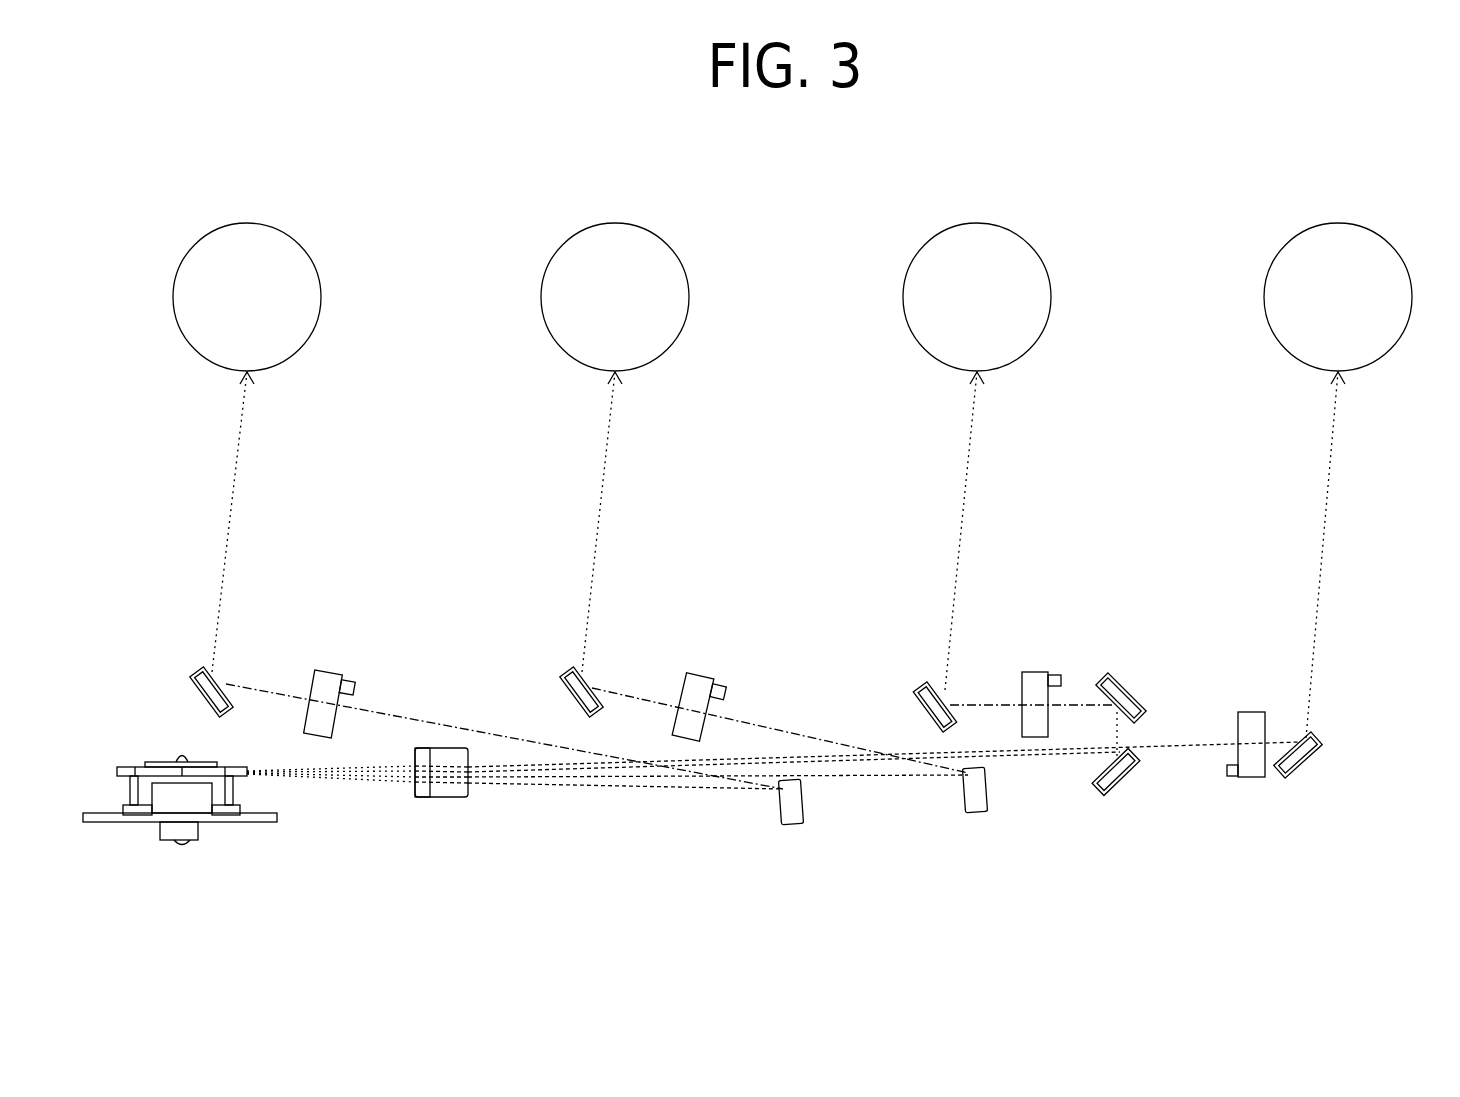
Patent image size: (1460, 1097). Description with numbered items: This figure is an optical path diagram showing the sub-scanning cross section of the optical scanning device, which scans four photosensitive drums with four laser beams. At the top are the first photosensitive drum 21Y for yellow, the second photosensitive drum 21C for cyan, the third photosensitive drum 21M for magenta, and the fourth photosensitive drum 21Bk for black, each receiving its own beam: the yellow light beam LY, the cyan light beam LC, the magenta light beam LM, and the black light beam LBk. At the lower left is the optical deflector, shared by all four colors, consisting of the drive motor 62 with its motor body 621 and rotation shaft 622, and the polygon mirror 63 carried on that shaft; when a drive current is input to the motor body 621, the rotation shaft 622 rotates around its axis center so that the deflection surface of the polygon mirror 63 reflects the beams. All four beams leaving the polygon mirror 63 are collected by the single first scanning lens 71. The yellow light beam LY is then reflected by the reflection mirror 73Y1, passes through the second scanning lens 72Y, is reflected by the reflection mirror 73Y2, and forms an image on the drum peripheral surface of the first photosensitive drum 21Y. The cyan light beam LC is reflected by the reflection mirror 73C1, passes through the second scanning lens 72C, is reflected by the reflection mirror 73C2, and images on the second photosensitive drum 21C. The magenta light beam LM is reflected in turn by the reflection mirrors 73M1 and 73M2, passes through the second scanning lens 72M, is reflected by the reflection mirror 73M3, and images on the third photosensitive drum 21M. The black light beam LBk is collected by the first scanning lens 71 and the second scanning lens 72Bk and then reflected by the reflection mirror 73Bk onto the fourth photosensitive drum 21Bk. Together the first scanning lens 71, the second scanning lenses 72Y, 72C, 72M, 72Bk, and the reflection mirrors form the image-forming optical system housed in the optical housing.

The first photosensitive drum 21Y is at (245, 238).
The second photosensitive drum 21C is at (613, 238).
The third photosensitive drum 21M is at (977, 238).
The fourth photosensitive drum 21Bk is at (1339, 238).
The yellow light beam LY is at (238, 480).
The cyan light beam LC is at (606, 480).
The magenta light beam LM is at (970, 480).
The black light beam LBk is at (1330, 480).
The drive motor 62 is at (180, 832).
The motor body 621 is at (140, 797).
The rotation shaft 622 is at (202, 869).
The polygon mirror 63 is at (120, 767).
The first scanning lens 71 is at (447, 798).
The second scanning lens 72Y is at (331, 670).
The second scanning lens 72C is at (701, 672).
The second scanning lens 72M is at (1035, 672).
The second scanning lens 72Bk is at (1252, 770).
The reflection mirror for yellow 73Y1 is at (792, 825).
The reflection mirror for yellow 73Y2 is at (200, 668).
The reflection mirror for cyan 73C1 is at (976, 812).
The reflection mirror for cyan 73C2 is at (570, 668).
The reflection mirror for magenta 73M1 is at (1113, 782).
The reflection mirror for magenta 73M2 is at (1130, 680).
The reflection mirror for magenta 73M3 is at (920, 685).
The reflection mirror for black 73Bk is at (1300, 770).